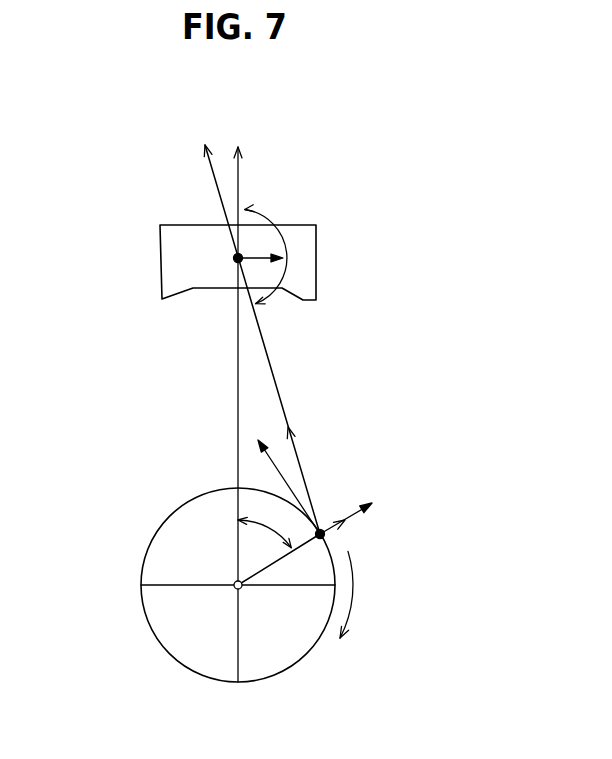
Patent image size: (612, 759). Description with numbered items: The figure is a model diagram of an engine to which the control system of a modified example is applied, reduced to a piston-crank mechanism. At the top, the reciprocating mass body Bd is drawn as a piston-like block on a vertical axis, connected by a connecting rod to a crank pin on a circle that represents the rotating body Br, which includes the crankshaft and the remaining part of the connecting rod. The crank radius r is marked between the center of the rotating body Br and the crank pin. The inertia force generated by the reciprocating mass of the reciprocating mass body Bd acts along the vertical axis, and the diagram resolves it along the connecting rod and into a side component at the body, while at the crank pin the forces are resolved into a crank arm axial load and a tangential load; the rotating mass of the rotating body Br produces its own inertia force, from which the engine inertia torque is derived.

The reciprocating mass body Bd is at (185, 283).
The crank radius r is at (283, 566).
The rotating body Br is at (147, 662).